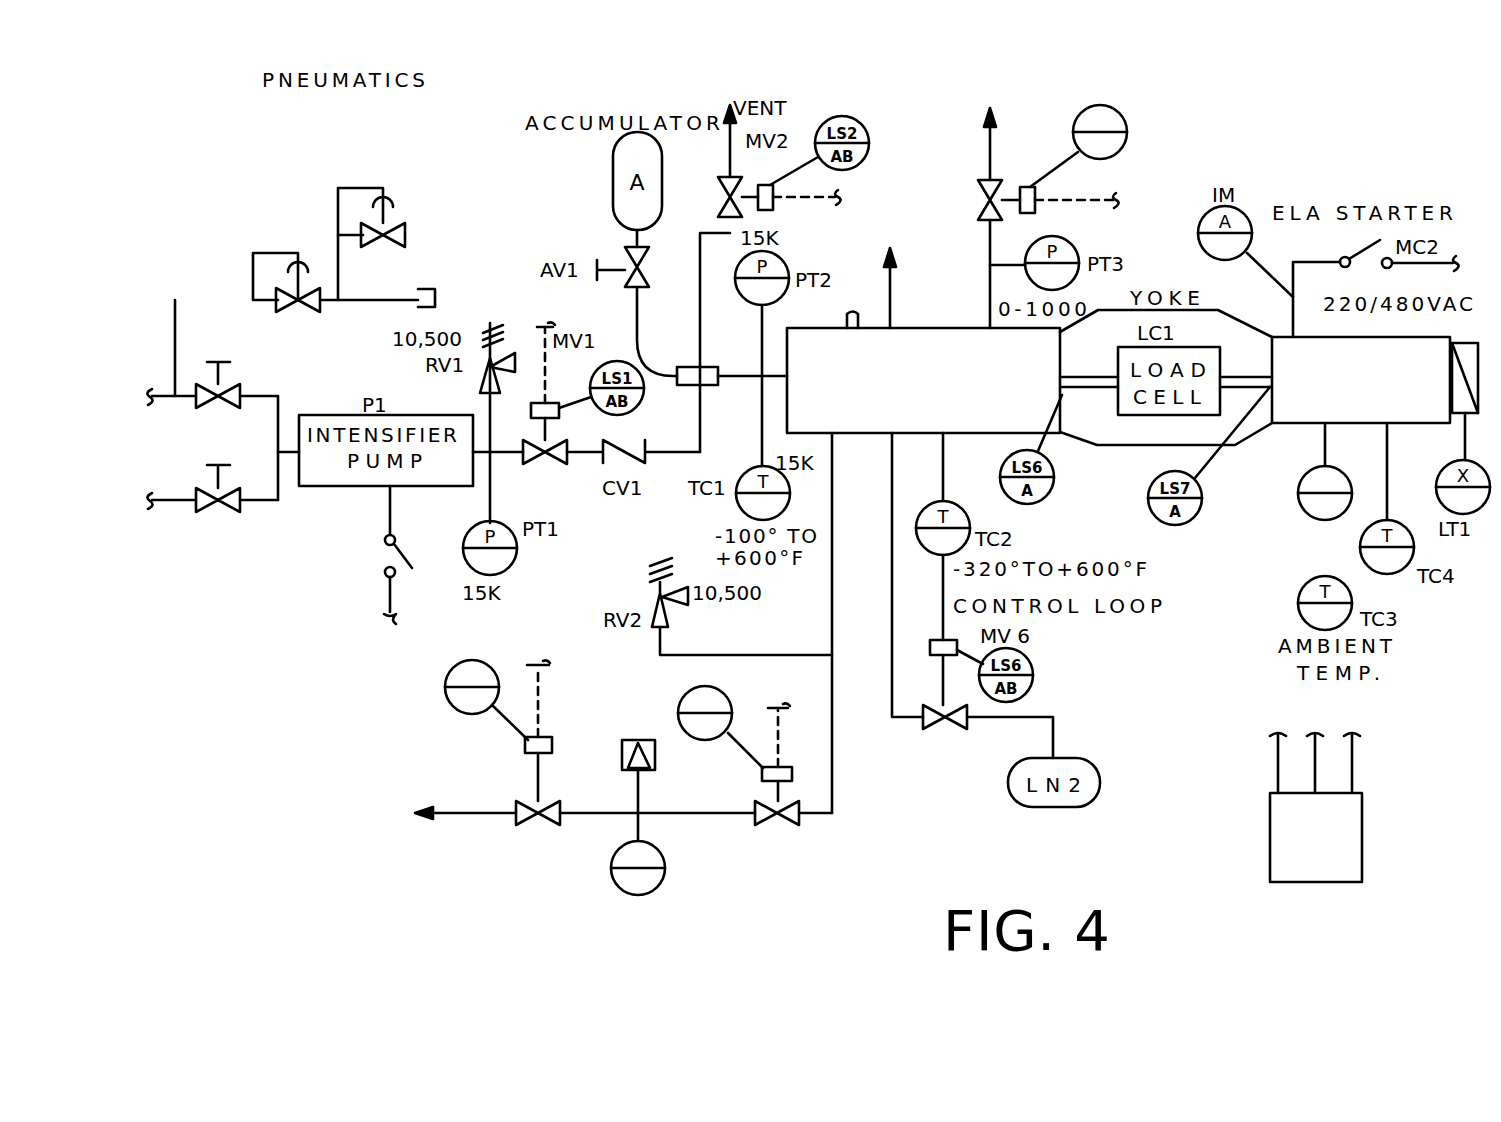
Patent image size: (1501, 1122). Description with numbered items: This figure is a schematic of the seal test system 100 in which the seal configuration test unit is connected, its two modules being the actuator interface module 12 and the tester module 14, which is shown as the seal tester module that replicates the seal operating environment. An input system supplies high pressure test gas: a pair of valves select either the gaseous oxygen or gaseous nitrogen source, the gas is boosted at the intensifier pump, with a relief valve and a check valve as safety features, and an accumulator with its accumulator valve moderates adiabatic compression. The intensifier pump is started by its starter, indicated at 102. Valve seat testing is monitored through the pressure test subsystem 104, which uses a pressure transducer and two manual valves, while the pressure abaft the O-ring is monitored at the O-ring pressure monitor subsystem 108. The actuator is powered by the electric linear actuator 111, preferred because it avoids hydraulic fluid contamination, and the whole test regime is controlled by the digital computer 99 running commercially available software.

The seal test system 100 is at (405, 235).
The intensifier starter 102 is at (228, 605).
The pressure test subsystem 104 is at (850, 903).
The O-ring pressure monitor subsystem 108 is at (1142, 187).
The tester module 14 is at (816, 328).
The electric linear actuator 111 is at (1307, 428).
The actuator interface module 12 is at (1262, 515).
The digital computer 99 is at (1285, 852).